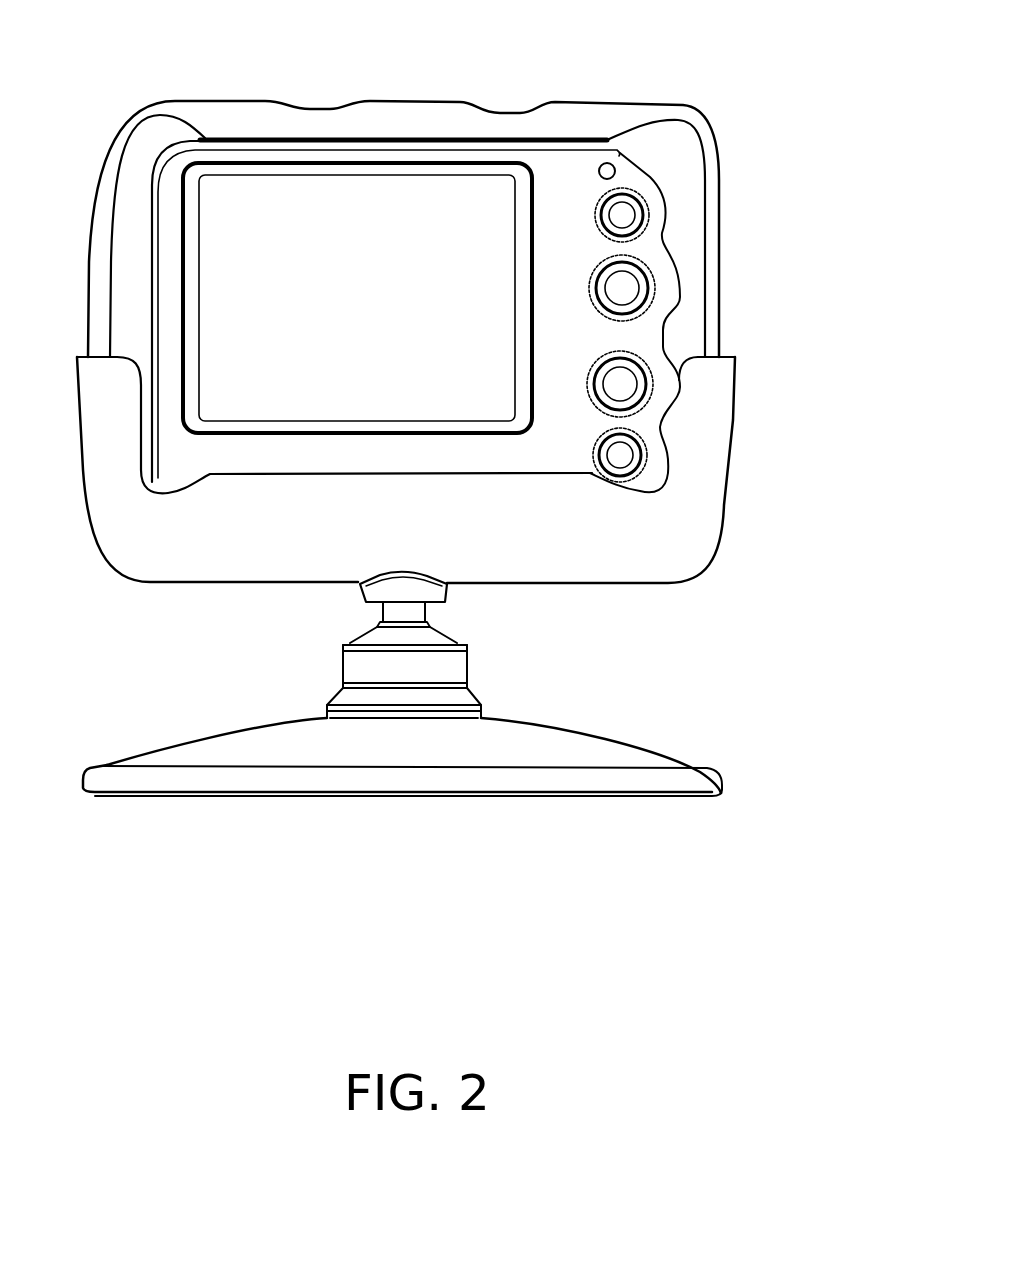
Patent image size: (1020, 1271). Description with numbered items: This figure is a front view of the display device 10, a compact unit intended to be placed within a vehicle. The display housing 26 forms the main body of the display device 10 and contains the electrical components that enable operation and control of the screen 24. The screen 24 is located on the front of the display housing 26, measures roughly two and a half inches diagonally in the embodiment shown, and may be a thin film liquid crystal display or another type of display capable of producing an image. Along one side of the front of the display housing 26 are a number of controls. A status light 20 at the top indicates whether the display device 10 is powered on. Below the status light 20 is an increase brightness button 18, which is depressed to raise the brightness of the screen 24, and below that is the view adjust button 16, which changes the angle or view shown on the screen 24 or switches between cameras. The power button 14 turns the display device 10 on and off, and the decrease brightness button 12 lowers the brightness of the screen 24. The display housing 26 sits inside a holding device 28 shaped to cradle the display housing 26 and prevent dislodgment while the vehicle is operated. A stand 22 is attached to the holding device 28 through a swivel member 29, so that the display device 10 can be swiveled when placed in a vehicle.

The display device 10 is at (458, 342).
The decrease brightness button 12 is at (655, 473).
The power button 14 is at (640, 386).
The view adjust button 16 is at (633, 286).
The increase brightness button 18 is at (636, 213).
The status light 20 is at (612, 162).
The stand 22 is at (612, 757).
The screen 24 is at (334, 298).
The display housing 26 is at (555, 118).
The holding device 28 is at (548, 528).
The swivel member 29 is at (383, 612).